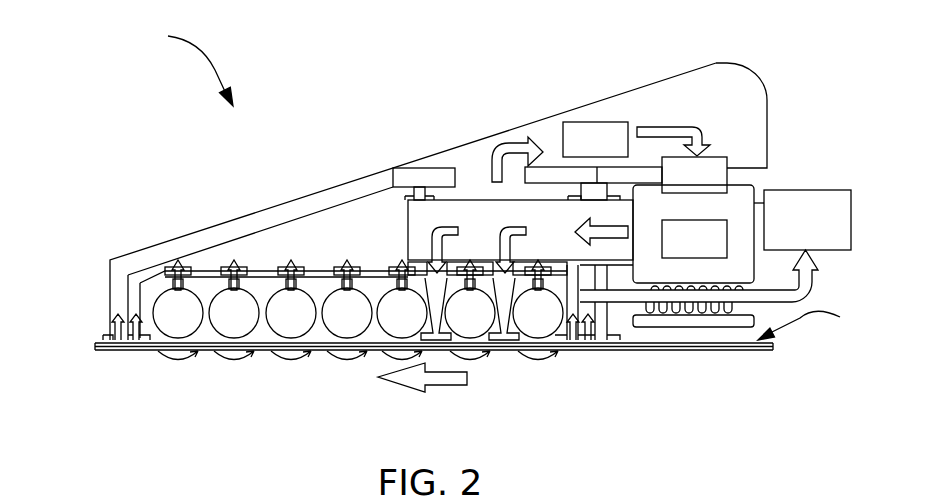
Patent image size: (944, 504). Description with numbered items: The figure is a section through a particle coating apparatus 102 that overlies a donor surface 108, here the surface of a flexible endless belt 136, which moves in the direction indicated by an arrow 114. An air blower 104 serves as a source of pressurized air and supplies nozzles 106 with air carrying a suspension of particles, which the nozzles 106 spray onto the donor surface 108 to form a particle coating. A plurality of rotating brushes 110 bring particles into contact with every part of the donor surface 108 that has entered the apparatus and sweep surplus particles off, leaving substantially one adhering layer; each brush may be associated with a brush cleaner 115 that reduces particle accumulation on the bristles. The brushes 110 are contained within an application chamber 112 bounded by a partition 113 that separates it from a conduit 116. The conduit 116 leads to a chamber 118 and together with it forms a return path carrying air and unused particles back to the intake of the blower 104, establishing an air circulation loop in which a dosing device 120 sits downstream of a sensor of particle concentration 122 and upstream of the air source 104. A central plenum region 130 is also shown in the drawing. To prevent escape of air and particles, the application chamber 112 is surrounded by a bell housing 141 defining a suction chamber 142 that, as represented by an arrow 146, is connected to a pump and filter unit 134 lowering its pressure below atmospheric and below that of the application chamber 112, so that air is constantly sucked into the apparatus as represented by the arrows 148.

The coating apparatus 102 is at (177, 64).
The air blower 104 is at (681, 252).
The nozzles 106 is at (502, 340).
The donor surface 108 is at (489, 327).
The rotating brushes 110 is at (345, 338).
The application chamber 112 is at (203, 287).
The partition 113 is at (258, 272).
The arrow 114 is at (408, 378).
The brush cleaner 115 is at (352, 262).
The conduit 116 is at (137, 303).
The chamber 118 is at (748, 113).
The dosing device 120 is at (681, 187).
The sensor of particle concentration 122 is at (583, 152).
The air plenum 130 is at (474, 216).
The pump and filter unit 134 is at (797, 232).
The flexible endless belt 136 is at (732, 350).
The bell housing 141 is at (152, 246).
The suction chamber 142 is at (245, 228).
The arrow 146 is at (808, 285).
The arrows 148 is at (108, 342).